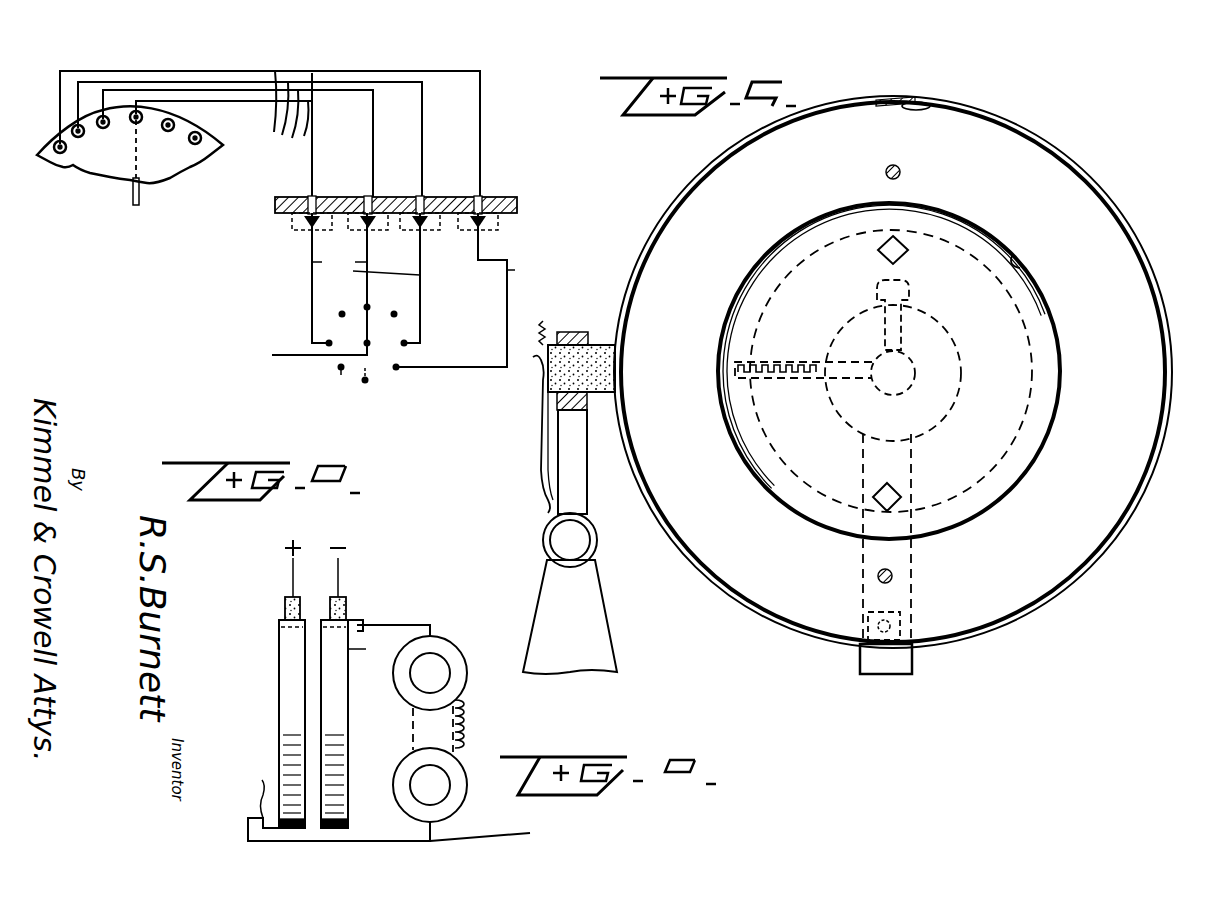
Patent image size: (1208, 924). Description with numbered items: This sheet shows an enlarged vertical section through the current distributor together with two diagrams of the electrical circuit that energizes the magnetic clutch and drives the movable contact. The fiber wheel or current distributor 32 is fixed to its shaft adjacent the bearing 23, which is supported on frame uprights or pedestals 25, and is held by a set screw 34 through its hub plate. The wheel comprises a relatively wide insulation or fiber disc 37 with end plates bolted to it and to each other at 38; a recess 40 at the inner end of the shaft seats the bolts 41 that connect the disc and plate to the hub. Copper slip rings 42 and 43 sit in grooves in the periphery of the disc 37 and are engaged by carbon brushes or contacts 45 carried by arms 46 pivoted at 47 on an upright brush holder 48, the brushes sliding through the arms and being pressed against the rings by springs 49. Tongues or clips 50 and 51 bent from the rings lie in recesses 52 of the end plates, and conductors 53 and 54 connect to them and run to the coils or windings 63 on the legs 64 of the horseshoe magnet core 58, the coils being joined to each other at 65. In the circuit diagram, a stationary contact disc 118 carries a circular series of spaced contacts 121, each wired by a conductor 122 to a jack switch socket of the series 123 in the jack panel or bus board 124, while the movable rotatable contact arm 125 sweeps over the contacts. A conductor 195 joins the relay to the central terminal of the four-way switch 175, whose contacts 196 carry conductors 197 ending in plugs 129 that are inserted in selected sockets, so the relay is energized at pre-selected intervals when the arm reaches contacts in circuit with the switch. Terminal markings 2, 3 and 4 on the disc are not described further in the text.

In FIG. 4, the fiber wheel or current distributor 32 is at (1142, 260).
In FIG. 4, the copper slip ring 43 is at (824, 104).
In FIG. 8, the copper slip ring 43 is at (371, 648).
In FIG. 4, the insulation or fiber disc 37 is at (889, 356).
In FIG. 4, the tongue or clip 51 is at (901, 99).
In FIG. 8, the tongue or clip 51 is at (362, 621).
In FIG. 4, the recess 52 is at (945, 103).
In FIG. 4, the recess 40 is at (1022, 270).
In FIG. 4, the bolts 38 is at (885, 174).
In FIG. 4, the bearing 23 is at (940, 318).
In FIG. 4, the set screw 34 is at (738, 372).
In FIG. 4, the bolts 41 is at (902, 258).
In FIG. 4, the tongue or clip 50 is at (918, 650).
In FIG. 8, the tongue or clip 50 is at (246, 790).
In FIG. 9, the tongue or clip 50 is at (162, 131).
In FIG. 4, the frame uprights or pedestals 25 is at (884, 665).
In FIG. 8, the carbon brushes or contacts 45 is at (603, 345).
In FIG. 8, the arms 46 is at (566, 443).
In FIG. 8, the springs 49 is at (536, 395).
In FIG. 9, the springs 49 is at (189, 145).
In FIG. 8, the pivot 47 is at (560, 538).
In FIG. 8, the upright brush holder 48 is at (592, 638).
In FIG. 8, the copper slip ring 42 is at (283, 652).
In FIG. 8, the conductor 53 is at (421, 625).
In FIG. 8, the coils or windings 63 is at (467, 690).
In FIG. 8, the legs of the magnet core 64 is at (422, 678).
In FIG. 8, the horseshoe magnet core 58 is at (413, 740).
In FIG. 8, the coil connection 65 is at (468, 732).
In FIG. 8, the conductor 54 is at (478, 848).
In FIG. 9, the stationary contact disc 118 is at (163, 178).
In FIG. 9, the terminal 2 is at (103, 130).
In FIG. 9, the terminal 3 is at (81, 138).
In FIG. 9, the terminal 4 is at (63, 153).
In FIG. 9, the contacts 121 is at (190, 113).
In FIG. 9, the conductor 122 is at (279, 118).
In FIG. 9, the jack switch sockets 123 is at (420, 205).
In FIG. 9, the jack panel or bus board 124 is at (522, 192).
In FIG. 9, the movable rotatable contact arm 125 is at (133, 203).
In FIG. 9, the plugs 129 is at (311, 230).
In FIG. 9, the four-way switch 175 is at (392, 326).
In FIG. 9, the conductor 195 is at (296, 355).
In FIG. 9, the contacts of switch 196 is at (365, 384).
In FIG. 9, the conductors 197 is at (433, 267).